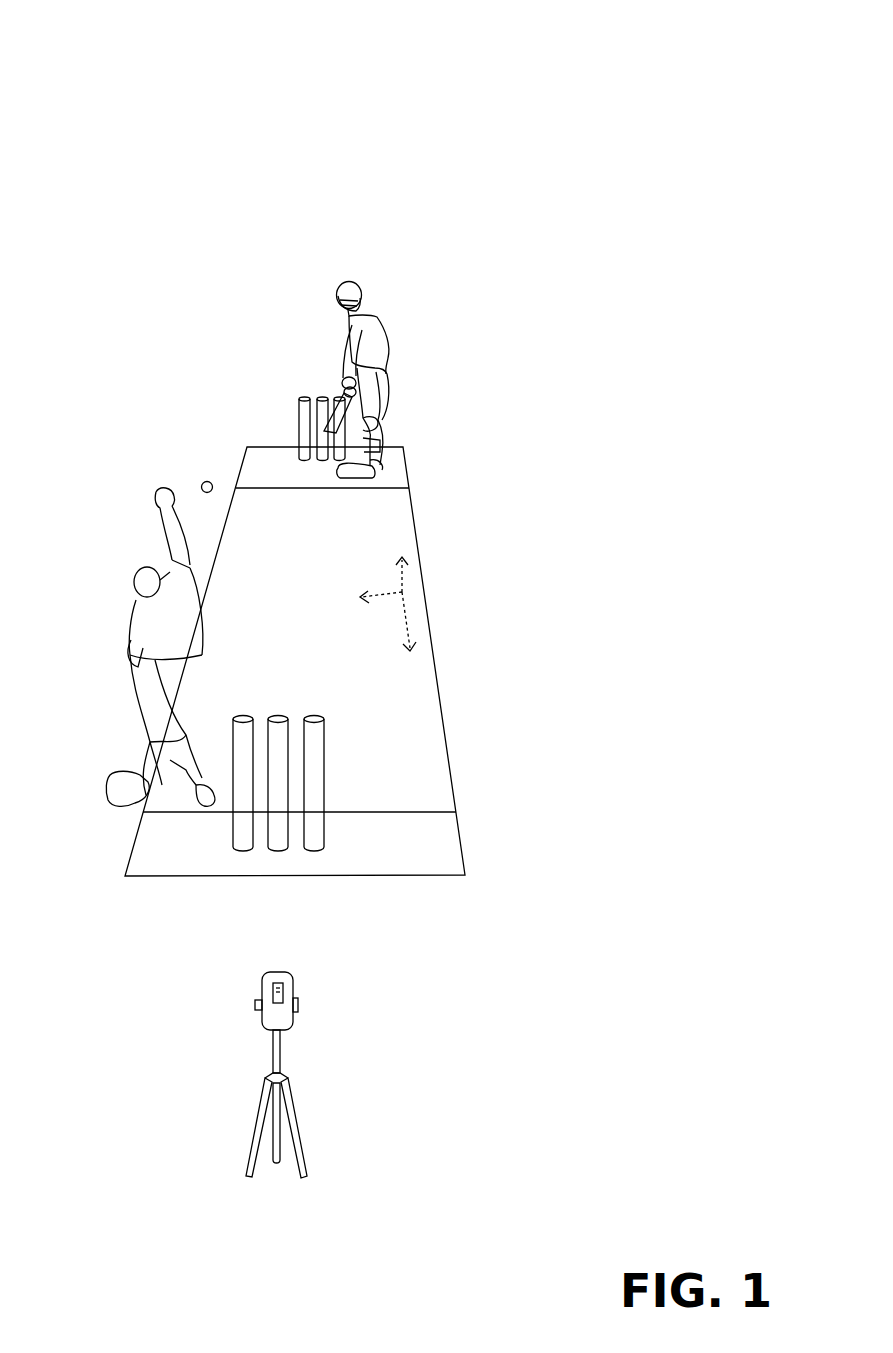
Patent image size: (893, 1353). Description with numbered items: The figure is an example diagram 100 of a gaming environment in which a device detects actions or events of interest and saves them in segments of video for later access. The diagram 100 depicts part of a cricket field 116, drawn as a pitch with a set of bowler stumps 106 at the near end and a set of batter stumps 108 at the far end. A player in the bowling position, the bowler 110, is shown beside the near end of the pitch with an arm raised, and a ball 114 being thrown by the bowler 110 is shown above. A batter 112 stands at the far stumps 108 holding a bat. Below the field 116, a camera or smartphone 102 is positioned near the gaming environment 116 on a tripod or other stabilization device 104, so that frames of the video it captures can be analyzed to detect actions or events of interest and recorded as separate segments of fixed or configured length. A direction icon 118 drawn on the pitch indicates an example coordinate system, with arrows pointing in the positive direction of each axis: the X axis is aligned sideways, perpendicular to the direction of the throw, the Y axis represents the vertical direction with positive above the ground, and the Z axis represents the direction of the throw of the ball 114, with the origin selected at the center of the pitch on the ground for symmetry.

The example diagram 100 is at (609, 109).
The camera device 102 is at (292, 1026).
The tripod 104 is at (302, 1147).
The bowler stumps 106 is at (332, 747).
The batter stumps 108 is at (290, 422).
The bowler 110 is at (122, 641).
The batter 112 is at (375, 323).
The ball 114 is at (202, 481).
The cricket field 116 is at (472, 882).
The direction icon 118 is at (408, 583).